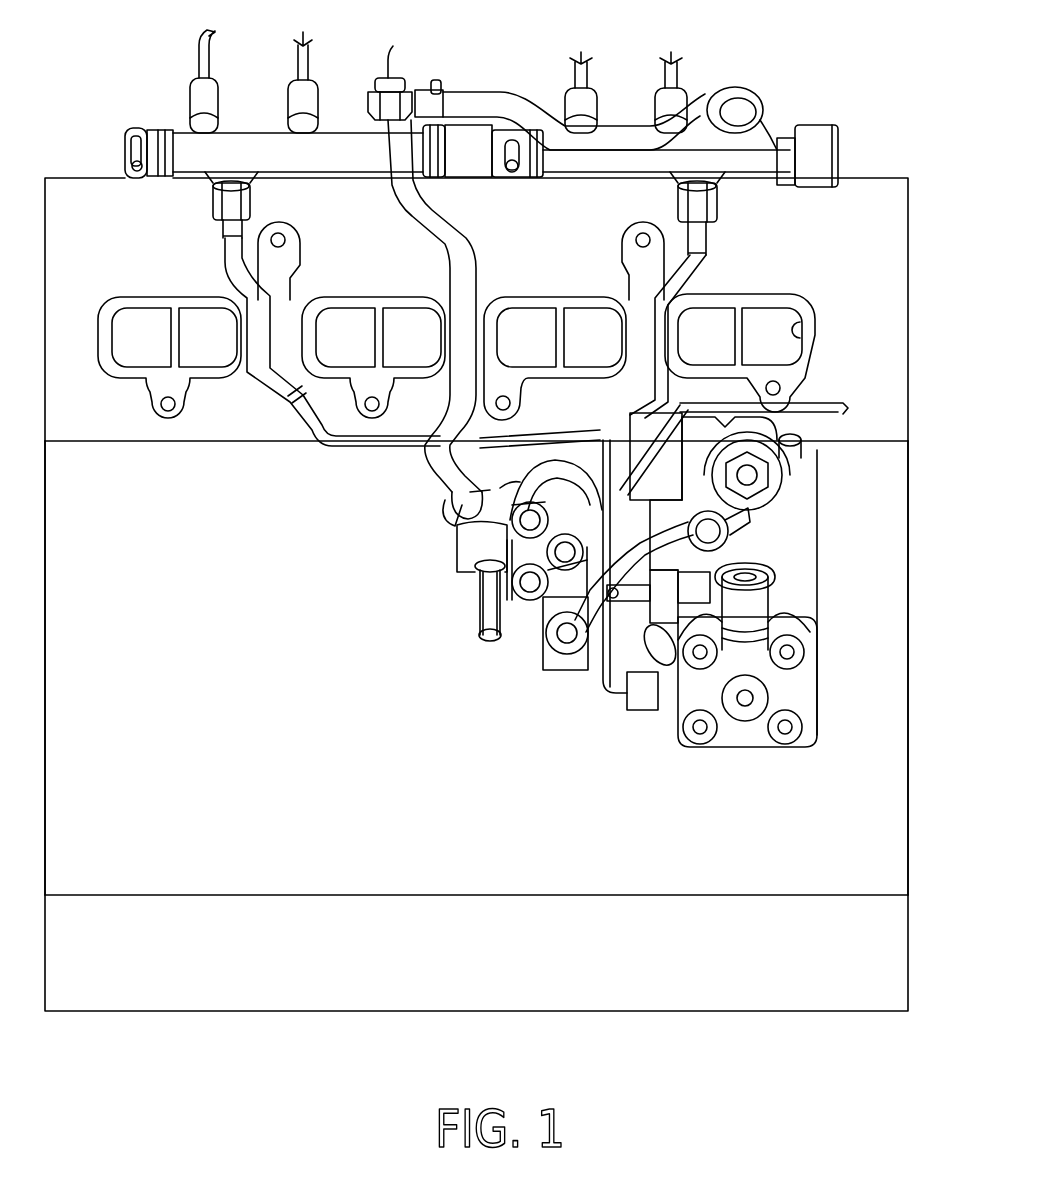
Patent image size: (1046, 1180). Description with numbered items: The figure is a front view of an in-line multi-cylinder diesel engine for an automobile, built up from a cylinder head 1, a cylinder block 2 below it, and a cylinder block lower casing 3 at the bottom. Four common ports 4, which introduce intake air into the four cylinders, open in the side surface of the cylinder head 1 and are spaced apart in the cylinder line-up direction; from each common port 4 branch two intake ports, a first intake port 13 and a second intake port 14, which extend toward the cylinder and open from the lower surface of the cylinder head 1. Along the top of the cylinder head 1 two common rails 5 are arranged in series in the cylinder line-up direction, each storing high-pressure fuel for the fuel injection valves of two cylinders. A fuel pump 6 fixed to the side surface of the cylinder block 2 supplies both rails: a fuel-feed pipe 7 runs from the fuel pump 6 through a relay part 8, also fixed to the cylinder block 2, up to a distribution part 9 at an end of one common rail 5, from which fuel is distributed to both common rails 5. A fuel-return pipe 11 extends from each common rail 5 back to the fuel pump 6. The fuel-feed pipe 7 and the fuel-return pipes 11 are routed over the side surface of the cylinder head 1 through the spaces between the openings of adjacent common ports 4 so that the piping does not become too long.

The cylinder head 1 is at (905, 268).
The cylinder block 2 is at (900, 556).
The cylinder block lower casing 3 is at (895, 961).
The common port 4 is at (168, 307).
The common rail 5 is at (258, 143).
The fuel pump 6 is at (822, 488).
The fuel-feed pipe 7 is at (430, 470).
The relay part 8 is at (455, 550).
The distribution part 9 is at (388, 78).
The fuel-return pipe 11 is at (300, 425).
The first intake port 13 is at (130, 332).
The second intake port 14 is at (202, 325).